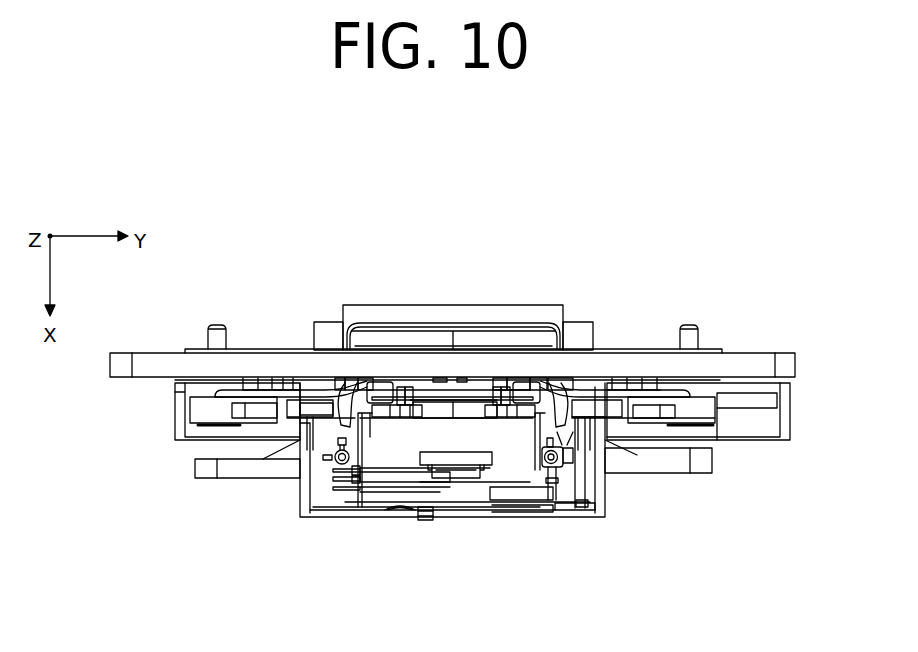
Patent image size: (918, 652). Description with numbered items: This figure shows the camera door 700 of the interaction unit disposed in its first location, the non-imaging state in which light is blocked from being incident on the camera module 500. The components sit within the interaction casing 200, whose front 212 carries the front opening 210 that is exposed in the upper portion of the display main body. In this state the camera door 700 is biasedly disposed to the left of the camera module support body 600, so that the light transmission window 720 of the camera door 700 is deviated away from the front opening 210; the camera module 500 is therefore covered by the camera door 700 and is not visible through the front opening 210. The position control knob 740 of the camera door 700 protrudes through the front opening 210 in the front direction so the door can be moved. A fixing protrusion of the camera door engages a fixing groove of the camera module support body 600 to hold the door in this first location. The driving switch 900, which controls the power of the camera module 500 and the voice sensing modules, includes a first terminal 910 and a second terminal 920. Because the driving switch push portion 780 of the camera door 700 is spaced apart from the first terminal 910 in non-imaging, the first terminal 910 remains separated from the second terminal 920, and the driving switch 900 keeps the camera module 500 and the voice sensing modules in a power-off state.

The interaction casing 200 is at (248, 495).
The front opening 210 is at (483, 515).
The front 212 is at (548, 515).
The camera module 500 is at (452, 475).
The camera module support body 600 is at (377, 457).
The camera door 700 is at (370, 500).
The light transmission window 720 is at (403, 510).
The position control knob 740 is at (423, 520).
The driving switch push portion 780 is at (510, 503).
The driving switch 900 is at (573, 455).
The first terminal 910 is at (560, 517).
The second terminal 920 is at (580, 503).